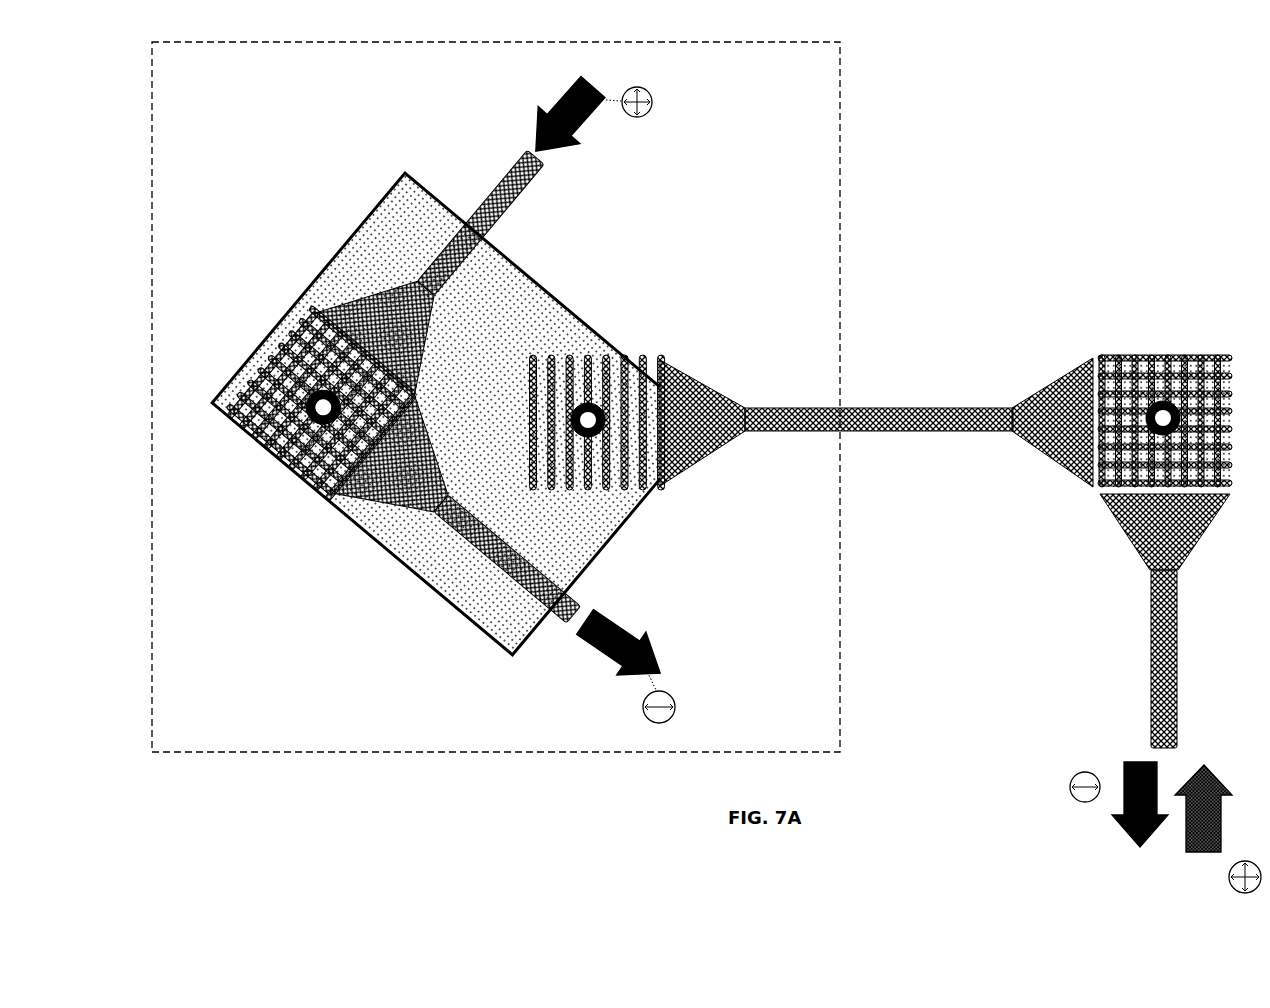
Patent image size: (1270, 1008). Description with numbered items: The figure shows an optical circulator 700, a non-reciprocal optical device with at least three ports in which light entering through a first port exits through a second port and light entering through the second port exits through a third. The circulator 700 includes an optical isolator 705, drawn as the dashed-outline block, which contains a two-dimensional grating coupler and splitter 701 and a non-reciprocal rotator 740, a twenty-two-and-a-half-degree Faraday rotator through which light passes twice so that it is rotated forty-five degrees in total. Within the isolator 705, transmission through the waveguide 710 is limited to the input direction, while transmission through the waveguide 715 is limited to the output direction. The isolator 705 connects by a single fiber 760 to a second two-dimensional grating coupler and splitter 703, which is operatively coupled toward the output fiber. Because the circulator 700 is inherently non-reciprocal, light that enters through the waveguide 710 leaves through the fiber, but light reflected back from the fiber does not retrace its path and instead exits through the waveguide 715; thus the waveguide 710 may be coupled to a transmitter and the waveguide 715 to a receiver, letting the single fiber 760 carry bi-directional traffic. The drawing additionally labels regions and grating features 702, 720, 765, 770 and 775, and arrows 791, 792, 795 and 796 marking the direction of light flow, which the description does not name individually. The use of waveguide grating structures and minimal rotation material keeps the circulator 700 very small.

The optical circulator 700 is at (395, 801).
The optical isolator 705 is at (351, 95).
The 2D grating coupler and splitter 701 is at (424, 440).
The second region with filter fingers 702 is at (661, 352).
The 2D grating coupler and splitter 703 is at (1113, 515).
The waveguide 710 is at (500, 182).
The waveguide 715 is at (542, 623).
The grid structure 720 is at (222, 391).
The non-reciprocal rotator 740 is at (382, 230).
The single fiber 760 is at (786, 405).
The outlet channel 765 is at (1168, 709).
The finger structures 770 is at (630, 492).
The grid structure 775 is at (1194, 358).
The inlet flow direction indicator 791 is at (616, 113).
The outlet flow direction indicator 792 is at (1127, 797).
The flow direction indicator 795 is at (1220, 820).
The outlet flow direction indicator 796 is at (629, 678).